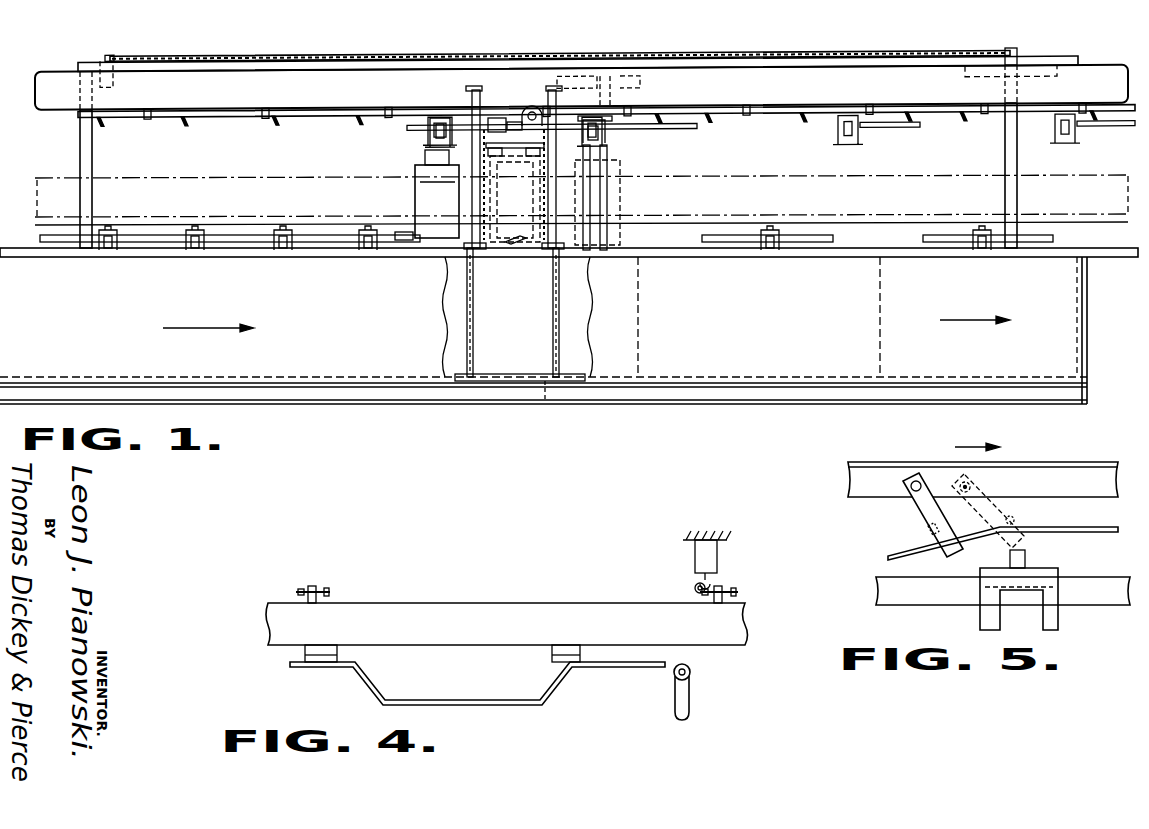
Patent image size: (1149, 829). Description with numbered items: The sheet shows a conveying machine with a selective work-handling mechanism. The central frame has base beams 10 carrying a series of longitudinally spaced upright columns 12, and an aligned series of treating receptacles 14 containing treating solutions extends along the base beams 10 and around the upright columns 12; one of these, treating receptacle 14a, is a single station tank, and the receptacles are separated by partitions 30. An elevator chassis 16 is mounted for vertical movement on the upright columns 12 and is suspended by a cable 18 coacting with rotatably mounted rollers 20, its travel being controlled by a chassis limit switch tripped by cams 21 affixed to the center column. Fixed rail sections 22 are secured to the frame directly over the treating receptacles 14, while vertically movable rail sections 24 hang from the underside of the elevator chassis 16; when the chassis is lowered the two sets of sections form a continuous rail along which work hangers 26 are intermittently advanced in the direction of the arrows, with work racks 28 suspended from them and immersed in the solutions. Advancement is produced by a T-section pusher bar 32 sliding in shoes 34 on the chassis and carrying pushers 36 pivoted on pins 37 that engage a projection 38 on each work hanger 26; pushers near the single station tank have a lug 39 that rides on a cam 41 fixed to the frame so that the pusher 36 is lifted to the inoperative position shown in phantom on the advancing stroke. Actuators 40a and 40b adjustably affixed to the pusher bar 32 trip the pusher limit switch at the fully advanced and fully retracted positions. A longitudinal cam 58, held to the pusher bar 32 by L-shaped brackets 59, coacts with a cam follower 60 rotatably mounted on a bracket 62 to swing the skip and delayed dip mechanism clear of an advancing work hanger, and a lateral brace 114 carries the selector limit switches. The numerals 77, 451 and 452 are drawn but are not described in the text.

In FIG. 1, the base beams 10 is at (786, 402).
In FIG. 1, the upright columns 12 is at (80, 143).
In FIG. 1, the treating receptacles 14 is at (70, 308).
In FIG. 1, the single station treating receptacle 14a is at (521, 366).
In FIG. 1, the elevator chassis 16 is at (735, 78).
In FIG. 1, the cable 18 is at (325, 58).
In FIG. 1, the rollers 20 is at (120, 60).
In FIG. 1, the cams 21 is at (620, 66).
In FIG. 1, the fixed rail sections 22 is at (228, 248).
In FIG. 1, the vertically movable rail sections 24 is at (670, 122).
In FIG. 5, the vertically movable rail sections 24 is at (910, 606).
In FIG. 1, the work hangers 26 is at (850, 150).
In FIG. 5, the work hangers 26 is at (1060, 624).
In FIG. 1, the work racks 28 is at (412, 195).
In FIG. 1, the partitions 30 is at (474, 337).
In FIG. 1, the pusher bar 32 is at (300, 113).
In FIG. 4, the pusher bar 32 is at (521, 604).
In FIG. 5, the pusher bar 32 is at (1076, 476).
In FIG. 1, the shoes 34 is at (148, 114).
In FIG. 1, the pushers 36 is at (180, 122).
In FIG. 5, the pushers 36 is at (1012, 480).
In FIG. 1, the pins 37 is at (266, 111).
In FIG. 5, the pins 37 is at (920, 482).
In FIG. 5, the projection 38 is at (1027, 560).
In FIG. 5, the lug 39 is at (907, 549).
In FIG. 4, the actuator 40a is at (330, 586).
In FIG. 4, the actuator 40b is at (728, 590).
In FIG. 1, the cam 41 is at (508, 244).
In FIG. 5, the cam 41 is at (1100, 534).
In FIG. 1, the carriage 77 is at (519, 168).
In FIG. 1, the lateral brace 114 is at (448, 120).
In FIG. 4, the fixed bracket 451 is at (692, 552).
In FIG. 1, the bracket 452 is at (642, 90).
In FIG. 4, the cam 58 is at (566, 694).
In FIG. 4, the L-shaped brackets 59 is at (336, 655).
In FIG. 4, the cam follower 60 is at (691, 673).
In FIG. 4, the bracket 62 is at (689, 705).